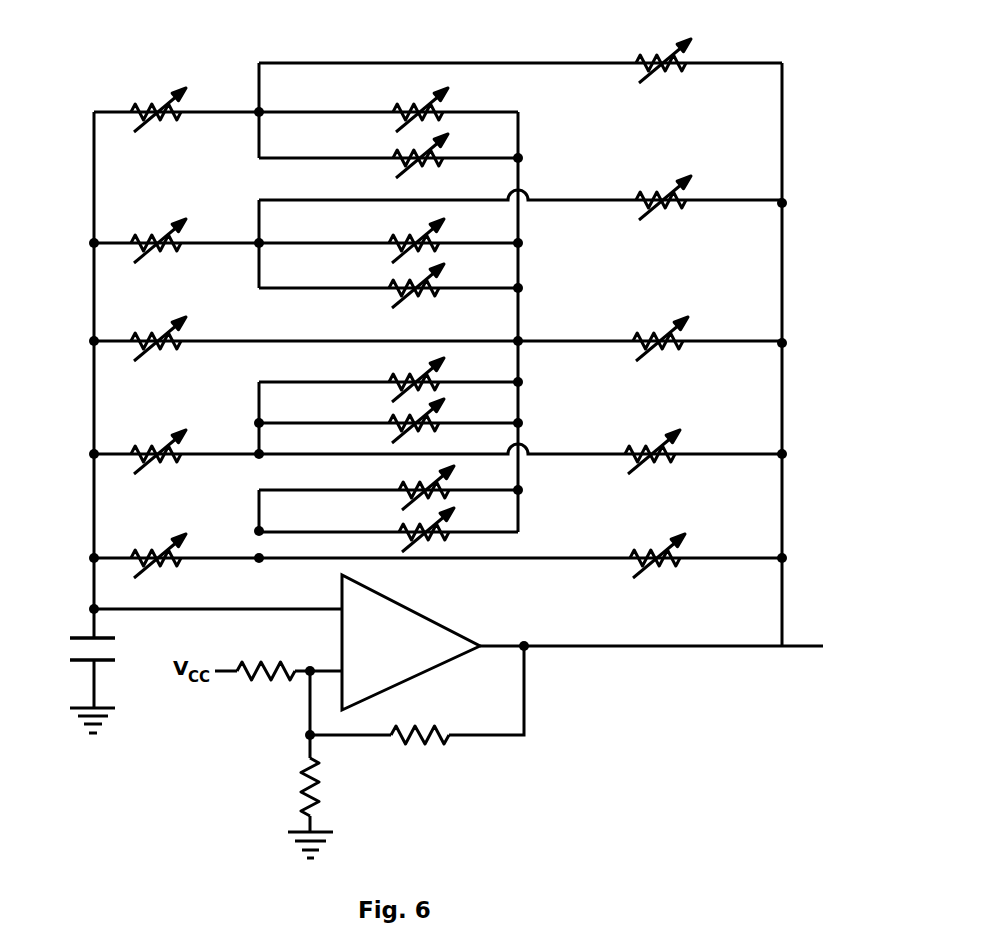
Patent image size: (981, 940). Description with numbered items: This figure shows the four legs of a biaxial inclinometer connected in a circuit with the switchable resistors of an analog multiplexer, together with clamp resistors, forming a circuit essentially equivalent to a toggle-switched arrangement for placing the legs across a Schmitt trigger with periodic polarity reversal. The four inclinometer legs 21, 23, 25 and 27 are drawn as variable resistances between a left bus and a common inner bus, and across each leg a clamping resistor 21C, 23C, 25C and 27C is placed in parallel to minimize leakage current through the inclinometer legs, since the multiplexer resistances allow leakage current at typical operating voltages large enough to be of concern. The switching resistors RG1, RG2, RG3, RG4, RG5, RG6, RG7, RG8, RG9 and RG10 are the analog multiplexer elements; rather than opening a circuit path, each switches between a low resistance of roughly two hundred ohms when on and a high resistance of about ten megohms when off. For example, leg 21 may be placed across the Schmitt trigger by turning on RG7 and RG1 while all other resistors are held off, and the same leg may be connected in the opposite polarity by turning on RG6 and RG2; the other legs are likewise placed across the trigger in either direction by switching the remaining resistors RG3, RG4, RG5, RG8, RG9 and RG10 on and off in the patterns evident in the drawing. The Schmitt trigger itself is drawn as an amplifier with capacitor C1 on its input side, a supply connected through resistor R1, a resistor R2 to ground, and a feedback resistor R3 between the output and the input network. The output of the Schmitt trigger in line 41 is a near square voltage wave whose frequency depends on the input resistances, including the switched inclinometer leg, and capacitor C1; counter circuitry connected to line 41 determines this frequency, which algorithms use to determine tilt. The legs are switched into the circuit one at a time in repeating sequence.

The leg of the biaxial inclinometer 21 is at (397, 106).
The clamping resistor 21C is at (398, 153).
The leg of the biaxial inclinometer 23 is at (393, 238).
The clamping resistor 23C is at (392, 284).
The leg of the biaxial inclinometer 25 is at (392, 420).
The clamping resistor 25C is at (393, 379).
The leg of the biaxial inclinometer 27 is at (403, 530).
The clamping resistor 27C is at (405, 487).
The output line 41 is at (658, 646).
The switching resistor RG1 is at (656, 334).
The switching resistor RG2 is at (653, 53).
The switching resistor RG3 is at (657, 192).
The switching resistor RG4 is at (647, 448).
The switching resistor RG5 is at (654, 551).
The switching resistor RG6 is at (153, 329).
The switching resistor RG7 is at (176, 100).
The switching resistor RG8 is at (176, 232).
The switching resistor RG9 is at (152, 442).
The switching resistor RG10 is at (151, 548).
The capacitor C1 is at (72, 653).
The resistor R1 is at (266, 651).
The resistor R2 is at (290, 787).
The resistor R3 is at (420, 757).